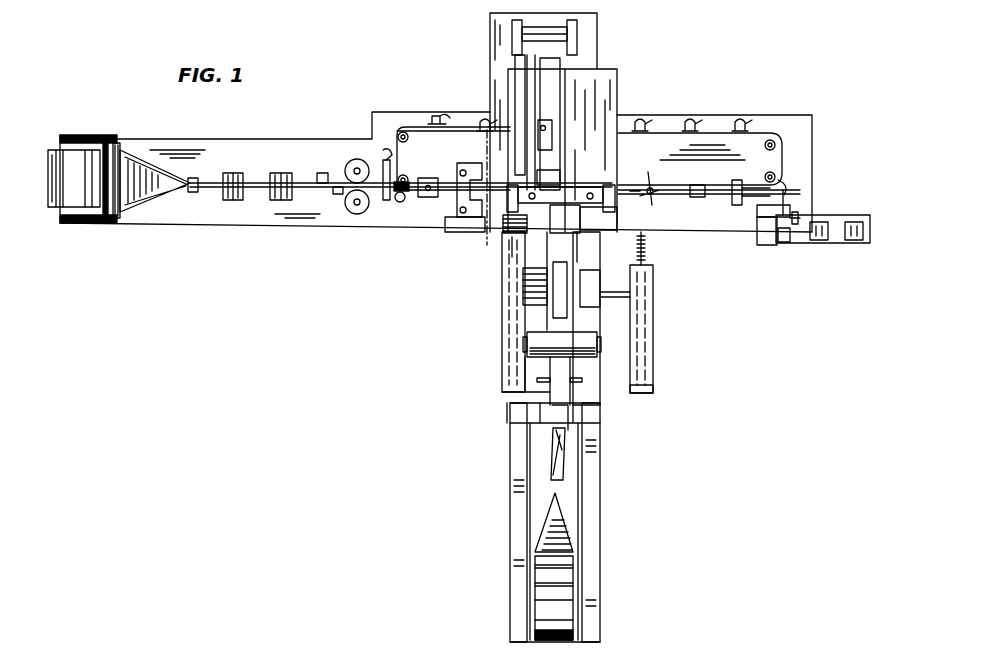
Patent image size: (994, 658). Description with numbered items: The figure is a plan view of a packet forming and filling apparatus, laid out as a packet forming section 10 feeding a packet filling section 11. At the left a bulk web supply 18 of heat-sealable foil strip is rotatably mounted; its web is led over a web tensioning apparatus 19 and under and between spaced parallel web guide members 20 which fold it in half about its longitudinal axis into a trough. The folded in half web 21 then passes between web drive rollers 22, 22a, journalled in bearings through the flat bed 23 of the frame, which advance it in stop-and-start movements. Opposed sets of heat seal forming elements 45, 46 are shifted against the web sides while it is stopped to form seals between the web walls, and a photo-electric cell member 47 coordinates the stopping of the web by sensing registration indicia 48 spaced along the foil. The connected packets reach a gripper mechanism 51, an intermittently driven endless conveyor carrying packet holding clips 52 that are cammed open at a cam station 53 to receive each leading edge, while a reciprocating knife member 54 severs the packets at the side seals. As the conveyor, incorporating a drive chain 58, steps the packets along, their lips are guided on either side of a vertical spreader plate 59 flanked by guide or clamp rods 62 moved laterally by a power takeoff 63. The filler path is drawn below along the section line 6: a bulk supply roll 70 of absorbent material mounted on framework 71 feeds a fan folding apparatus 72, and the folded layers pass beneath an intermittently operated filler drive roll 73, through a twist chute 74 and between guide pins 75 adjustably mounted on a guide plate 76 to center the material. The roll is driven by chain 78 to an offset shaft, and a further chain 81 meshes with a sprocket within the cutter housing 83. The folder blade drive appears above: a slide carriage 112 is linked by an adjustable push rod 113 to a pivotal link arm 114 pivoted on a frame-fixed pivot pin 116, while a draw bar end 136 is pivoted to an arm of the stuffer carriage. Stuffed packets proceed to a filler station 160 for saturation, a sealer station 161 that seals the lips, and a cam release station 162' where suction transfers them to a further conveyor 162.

The packet forming section 10 is at (260, 268).
The packet filling section 11 is at (657, 97).
The bulk web supply 18 is at (52, 208).
The web tensioning apparatus 19 is at (110, 214).
The web guide members 20 is at (194, 178).
The folded in half web 21 is at (208, 182).
The web drive roller 22 is at (351, 213).
The web drive roller 22a is at (352, 160).
The flat bed 23 is at (165, 215).
The heat seal forming elements 45 is at (236, 173).
The heat seal forming elements 46 is at (287, 173).
The photo-electric cell member 47 is at (320, 172).
The registration indicia 48 is at (338, 194).
The gripper mechanism 51 is at (776, 129).
The packet holding clips 52 is at (437, 113).
The cam station 53 is at (401, 203).
The reciprocating knife member 54 is at (386, 202).
The drive chain 58 is at (722, 133).
The spreader plate 59 is at (425, 177).
The guide or clamp rods 62 is at (483, 176).
The power takeoff 63 is at (462, 232).
The section line 6- 6 is at (499, 251).
The bulk supply roll 70 is at (560, 643).
The framework 71 is at (600, 572).
The fan folding apparatus 72 is at (570, 516).
The filler drive roll 73 is at (527, 350).
The twist chute 74 is at (553, 452).
The guide pins 75 is at (543, 378).
The guide plate 76 is at (599, 402).
The chain 78 is at (650, 262).
The chain 81 is at (648, 393).
The cutter housing 83 is at (496, 322).
The slide carriage 112 is at (552, 136).
The adjustable push rod 113 is at (530, 92).
The pivotal link arm 114 is at (577, 38).
The pivot pin 116 is at (527, 10).
The end of draw bar 136 is at (560, 181).
The filler station 160 is at (661, 203).
The sealer station 161 is at (735, 206).
The further conveyor 162 is at (823, 221).
The cam release station 162' is at (755, 247).